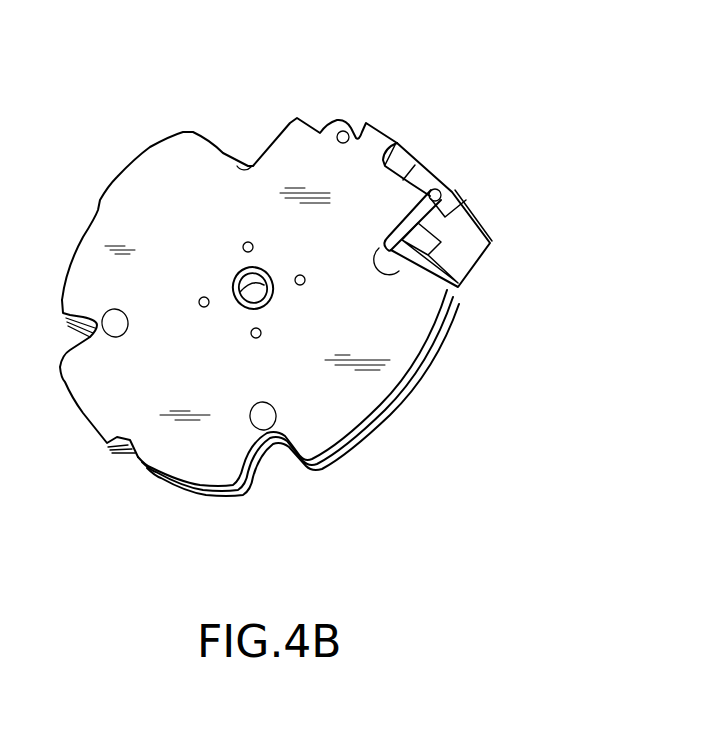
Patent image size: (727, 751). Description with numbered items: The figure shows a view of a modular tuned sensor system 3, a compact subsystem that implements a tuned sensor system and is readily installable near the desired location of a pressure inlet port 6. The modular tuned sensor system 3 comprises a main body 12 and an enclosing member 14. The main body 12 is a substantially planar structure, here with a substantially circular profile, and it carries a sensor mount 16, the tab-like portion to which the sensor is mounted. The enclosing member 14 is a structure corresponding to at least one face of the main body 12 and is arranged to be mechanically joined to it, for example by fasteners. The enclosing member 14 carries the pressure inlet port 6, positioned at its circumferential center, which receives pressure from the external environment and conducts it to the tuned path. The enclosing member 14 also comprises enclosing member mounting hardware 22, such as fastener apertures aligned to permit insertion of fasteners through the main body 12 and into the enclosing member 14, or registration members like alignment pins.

The modular tuned sensor system 3 is at (449, 69).
The pressure inlet port 6 is at (246, 284).
The main body 12 is at (449, 347).
The enclosing member 14 is at (363, 398).
The sensor mount 16 is at (470, 250).
The enclosing member mounting hardware 22 is at (190, 308).